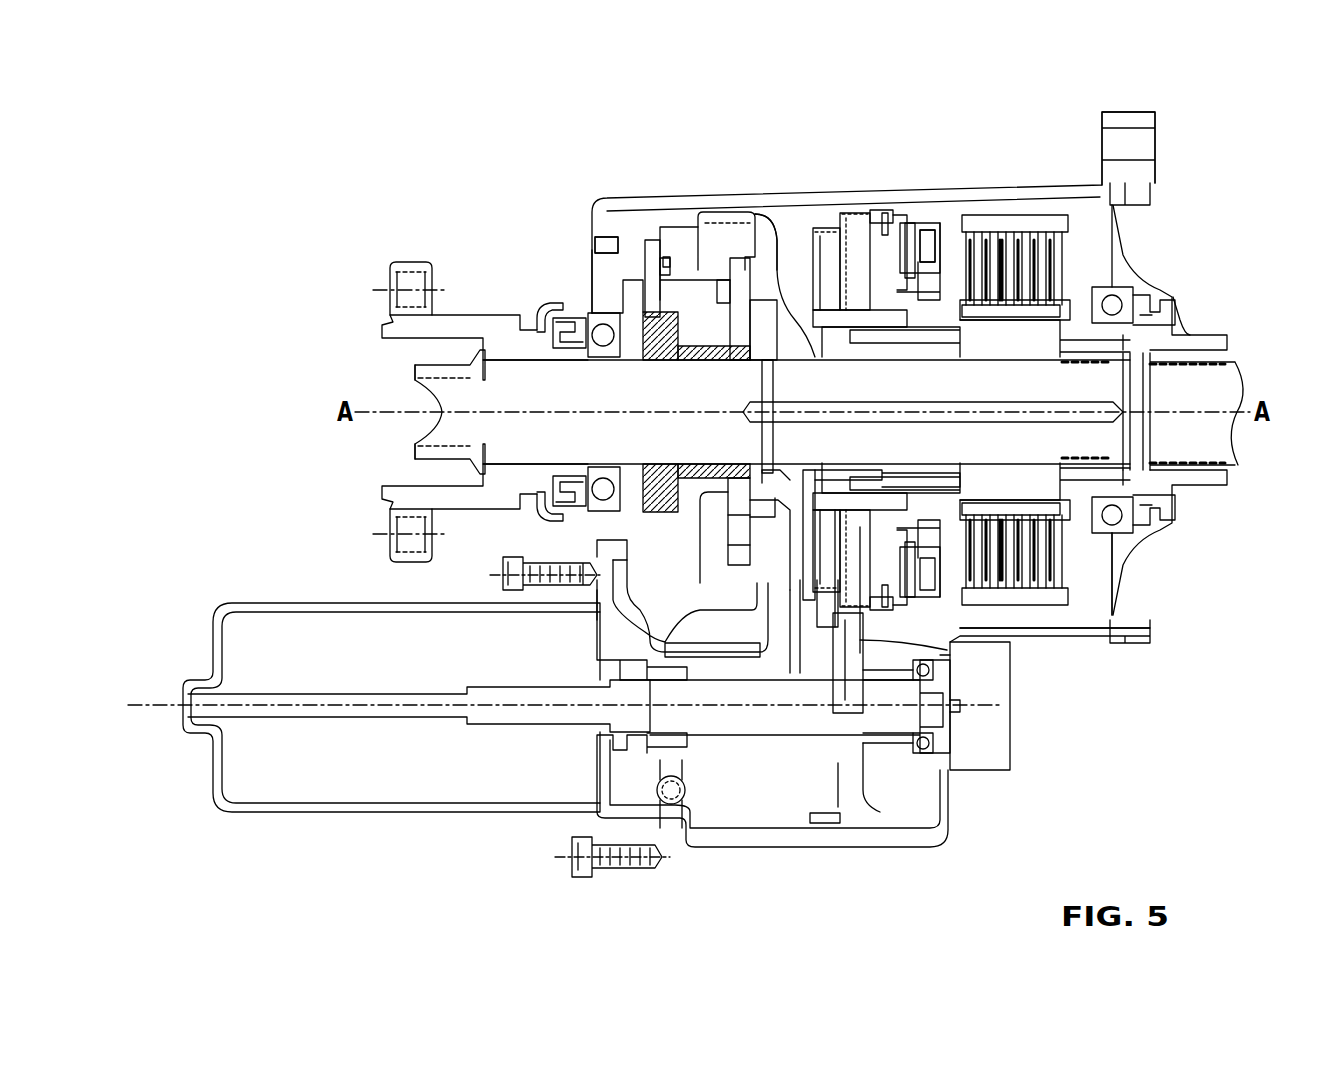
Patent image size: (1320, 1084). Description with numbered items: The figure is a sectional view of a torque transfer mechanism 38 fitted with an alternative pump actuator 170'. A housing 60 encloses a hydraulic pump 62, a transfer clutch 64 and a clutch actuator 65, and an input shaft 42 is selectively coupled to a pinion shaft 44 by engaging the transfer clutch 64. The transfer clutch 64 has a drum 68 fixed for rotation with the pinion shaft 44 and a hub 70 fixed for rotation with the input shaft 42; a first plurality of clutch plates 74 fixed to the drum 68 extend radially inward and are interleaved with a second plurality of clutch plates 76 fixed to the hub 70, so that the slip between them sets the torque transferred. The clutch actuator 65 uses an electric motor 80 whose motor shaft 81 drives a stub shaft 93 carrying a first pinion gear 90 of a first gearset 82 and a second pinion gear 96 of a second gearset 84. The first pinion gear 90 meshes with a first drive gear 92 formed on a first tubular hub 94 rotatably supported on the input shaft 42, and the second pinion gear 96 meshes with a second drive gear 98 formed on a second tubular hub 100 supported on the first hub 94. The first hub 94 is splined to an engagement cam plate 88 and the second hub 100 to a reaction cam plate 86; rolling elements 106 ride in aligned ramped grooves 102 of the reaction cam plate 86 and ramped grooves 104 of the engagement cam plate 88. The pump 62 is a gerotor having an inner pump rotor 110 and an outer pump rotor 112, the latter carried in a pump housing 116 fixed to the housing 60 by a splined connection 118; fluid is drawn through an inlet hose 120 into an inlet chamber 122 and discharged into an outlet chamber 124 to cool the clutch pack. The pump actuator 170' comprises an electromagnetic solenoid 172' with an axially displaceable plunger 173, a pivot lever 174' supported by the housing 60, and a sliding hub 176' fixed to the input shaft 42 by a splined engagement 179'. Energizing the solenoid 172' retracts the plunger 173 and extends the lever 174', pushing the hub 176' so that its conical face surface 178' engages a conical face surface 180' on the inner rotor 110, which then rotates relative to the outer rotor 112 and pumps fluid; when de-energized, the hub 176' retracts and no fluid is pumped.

The torque transfer mechanism 38 is at (1150, 705).
The input shaft 42 is at (413, 388).
The pinion shaft 44 is at (1230, 375).
The housing 60 is at (1076, 185).
The hydraulic pump 62 is at (772, 262).
The transfer clutch 64 is at (1000, 225).
The clutch actuator 65 is at (694, 828).
The drum 68 is at (1075, 235).
The hub 70 is at (1090, 508).
The first plurality of clutch plates 74 is at (1100, 232).
The second plurality of clutch plates 76 is at (1075, 540).
The electric motor 80 is at (410, 814).
The motor shaft 81 is at (522, 690).
The first gearset 82 is at (796, 598).
The second gearset 84 is at (865, 620).
The reaction cam plate 86 is at (920, 262).
The engagement cam plate 88 is at (1000, 200).
The first pinion gear 90 is at (825, 825).
The first drive gear 92 is at (828, 280).
The stub shaft 93 is at (765, 740).
The first tubular hub 94 is at (905, 345).
The second pinion gear 96 is at (880, 830).
The second drive gear 98 is at (848, 212).
The second tubular hub 100 is at (980, 330).
The ramped grooves 102 is at (884, 212).
The ramped grooves 104 is at (1012, 225).
The rolling elements 106 is at (925, 255).
The inner pump rotor 110 is at (815, 355).
The outer pump rotor 112 is at (738, 257).
The pump housing 116 is at (785, 480).
The splined connection 118 is at (760, 215).
The inlet hose 120 is at (715, 640).
The inlet chamber 122 is at (735, 517).
The outlet chamber 124 is at (700, 340).
The pump actuator 170' is at (690, 206).
The electromagnetic solenoid 172' is at (584, 231).
The plunger 173 is at (630, 230).
The pivot lever 174' is at (726, 182).
The sliding hub 176' is at (625, 321).
The conical face surface 178' is at (794, 386).
The splined engagement 179' is at (696, 468).
The conical face surface 180' is at (905, 400).